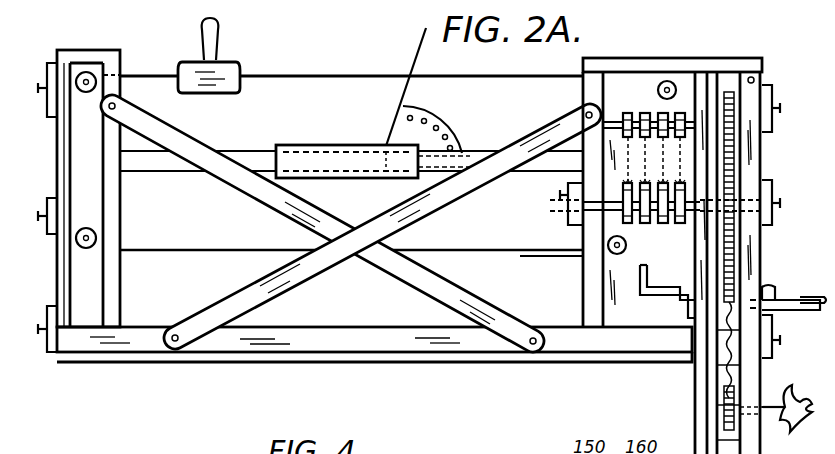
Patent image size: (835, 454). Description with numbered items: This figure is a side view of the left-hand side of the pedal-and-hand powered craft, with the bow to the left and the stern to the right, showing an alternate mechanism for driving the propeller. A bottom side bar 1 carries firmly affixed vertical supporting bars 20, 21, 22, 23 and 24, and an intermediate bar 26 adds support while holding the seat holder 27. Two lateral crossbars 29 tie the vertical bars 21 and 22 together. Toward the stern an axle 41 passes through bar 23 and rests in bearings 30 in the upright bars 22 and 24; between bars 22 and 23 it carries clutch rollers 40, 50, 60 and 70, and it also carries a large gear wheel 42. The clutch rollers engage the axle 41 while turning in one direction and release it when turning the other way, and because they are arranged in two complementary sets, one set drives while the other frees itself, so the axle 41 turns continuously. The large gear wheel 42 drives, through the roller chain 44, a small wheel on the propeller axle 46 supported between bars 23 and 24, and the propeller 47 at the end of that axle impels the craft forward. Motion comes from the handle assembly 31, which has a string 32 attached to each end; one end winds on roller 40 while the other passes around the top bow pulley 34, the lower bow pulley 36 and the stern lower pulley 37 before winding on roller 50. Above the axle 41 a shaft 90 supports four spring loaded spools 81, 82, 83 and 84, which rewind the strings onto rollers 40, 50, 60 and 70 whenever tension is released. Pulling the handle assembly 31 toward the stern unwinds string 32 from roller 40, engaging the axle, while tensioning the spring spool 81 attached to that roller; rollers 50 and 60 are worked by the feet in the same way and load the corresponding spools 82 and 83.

The bottom side bar 1 is at (372, 353).
The vertical supporting bar 20 is at (60, 153).
The vertical supporting bar 21 is at (122, 189).
The vertical supporting bar 22 is at (592, 316).
The vertical supporting bar 23 is at (702, 370).
The vertical supporting bar 24 is at (760, 376).
The intermediate bar 26 is at (246, 150).
The seat holder 27 is at (333, 160).
The lateral crossbar 29 is at (238, 294).
The bearing 30 is at (570, 206).
The handle assembly 31 is at (217, 36).
The string 32 is at (340, 74).
The top bow pulley 34 is at (89, 72).
The lower bow pulley 36 is at (96, 236).
The stern lower pulley 37 is at (622, 255).
The clutch roller 40 is at (618, 220).
The axle 41 is at (618, 212).
The large gear wheel 42 is at (736, 162).
The roller chain 44 is at (718, 428).
The propeller axle 46 is at (788, 414).
The propeller 47 is at (800, 416).
The clutch roller 50 is at (643, 224).
The clutch roller 60 is at (662, 224).
The clutch roller 70 is at (686, 226).
The spring loaded spool 81 is at (621, 132).
The spring loaded spool 82 is at (645, 112).
The spring loaded spool 83 is at (668, 81).
The spring loaded spool 84 is at (686, 118).
The shaft 90 is at (607, 119).